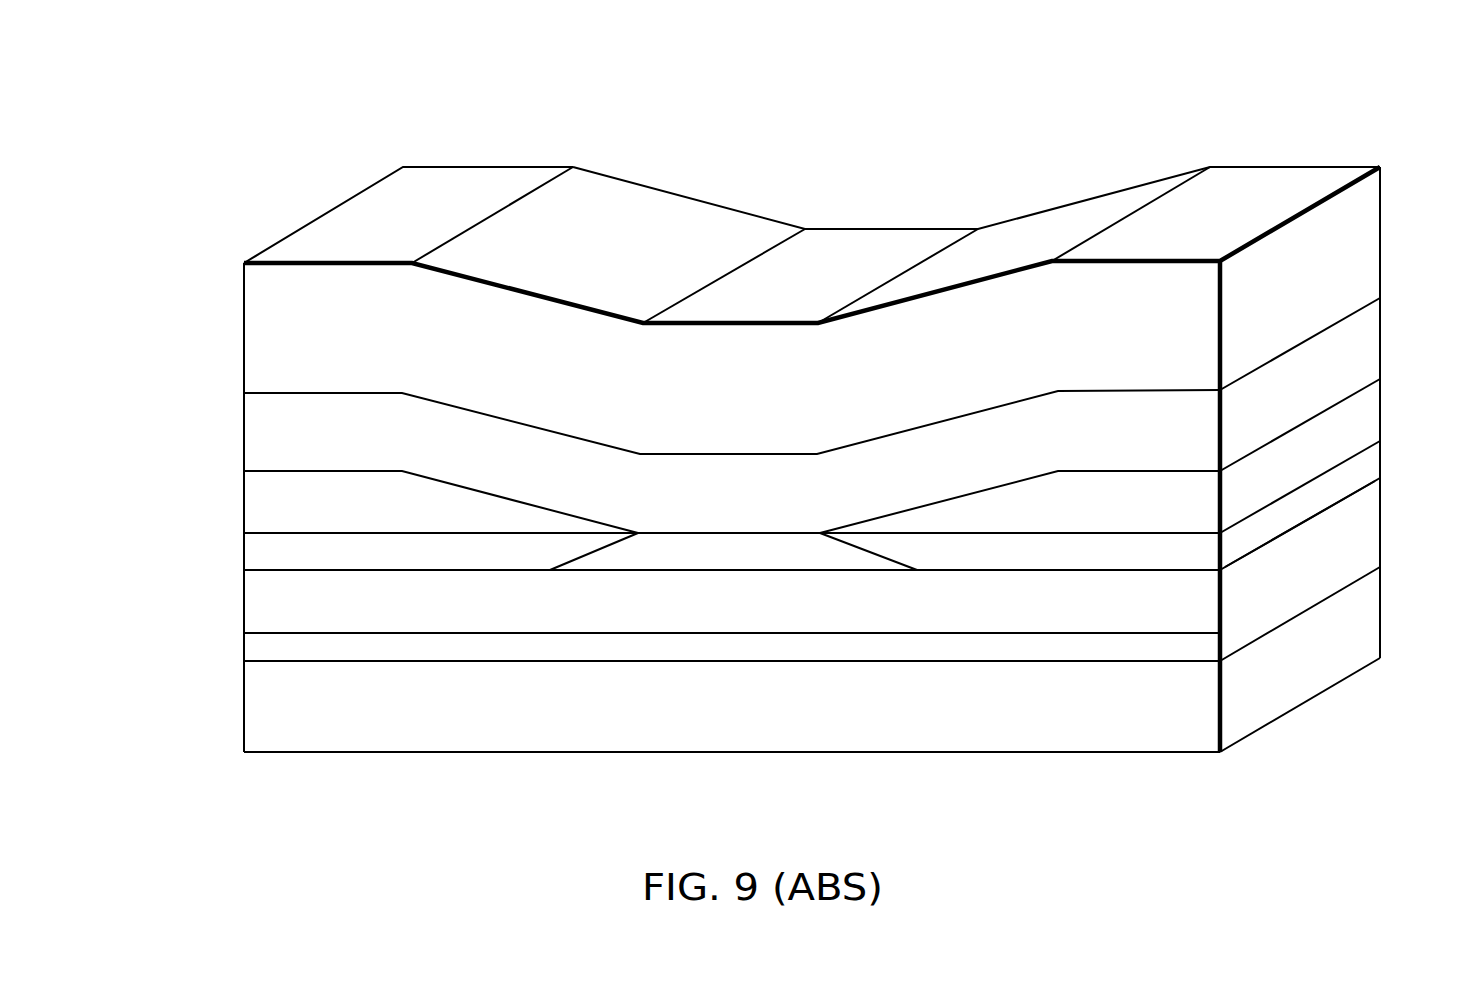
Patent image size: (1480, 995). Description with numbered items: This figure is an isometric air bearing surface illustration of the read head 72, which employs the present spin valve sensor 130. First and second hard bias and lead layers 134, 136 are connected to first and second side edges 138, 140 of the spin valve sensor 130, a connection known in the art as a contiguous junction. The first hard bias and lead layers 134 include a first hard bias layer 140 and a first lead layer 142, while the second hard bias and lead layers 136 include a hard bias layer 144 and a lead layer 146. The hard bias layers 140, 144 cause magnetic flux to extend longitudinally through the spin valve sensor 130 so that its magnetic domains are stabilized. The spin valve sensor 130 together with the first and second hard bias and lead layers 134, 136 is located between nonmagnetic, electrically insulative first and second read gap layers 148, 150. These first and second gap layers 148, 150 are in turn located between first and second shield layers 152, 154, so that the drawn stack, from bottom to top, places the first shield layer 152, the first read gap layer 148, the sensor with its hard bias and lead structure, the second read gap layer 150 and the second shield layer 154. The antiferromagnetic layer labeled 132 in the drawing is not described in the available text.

The read head 72 is at (893, 177).
The spin valve sensor 130 is at (668, 532).
The antiferromagnetic NiO layer 132 is at (828, 617).
The first hard bias and lead layers 134 is at (228, 478).
The second hard bias and lead layers 136 is at (1397, 382).
The first side edge 138 is at (585, 556).
The first hard bias layer 140 is at (285, 556).
The first lead layer 142 is at (280, 500).
The hard bias layer 144 is at (1348, 479).
The lead layer 146 is at (1347, 424).
The first read gap layer 148 is at (487, 648).
The second read gap layer 150 is at (500, 455).
The first shield layer 152 is at (355, 708).
The second shield layer 154 is at (603, 203).